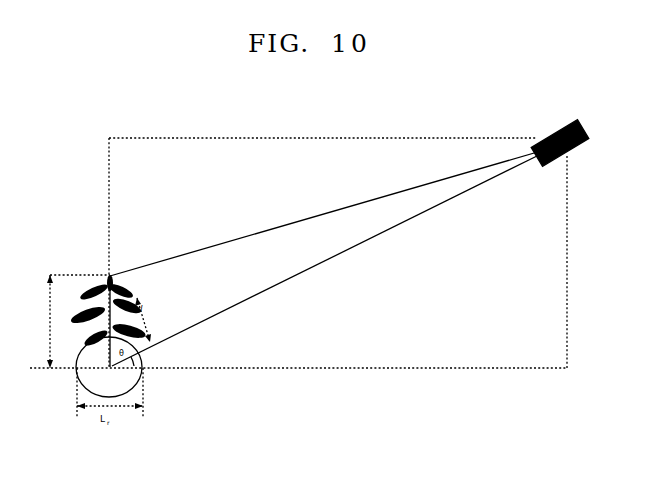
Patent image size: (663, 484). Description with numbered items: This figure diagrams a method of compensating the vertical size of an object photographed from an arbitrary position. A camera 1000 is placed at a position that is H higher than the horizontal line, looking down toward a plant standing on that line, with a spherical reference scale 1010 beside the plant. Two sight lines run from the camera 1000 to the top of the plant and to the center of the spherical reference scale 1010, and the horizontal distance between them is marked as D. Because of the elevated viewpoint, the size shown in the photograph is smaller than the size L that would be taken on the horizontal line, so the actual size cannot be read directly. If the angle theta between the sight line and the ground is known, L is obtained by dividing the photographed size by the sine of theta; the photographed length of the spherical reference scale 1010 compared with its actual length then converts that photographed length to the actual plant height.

The camera 1000 is at (571, 120).
The spherical reference scale 1010 is at (80, 388).
The camera height H is at (579, 262).
The horizontal distance D is at (298, 382).
The size taken on the horizontal line L is at (70, 321).